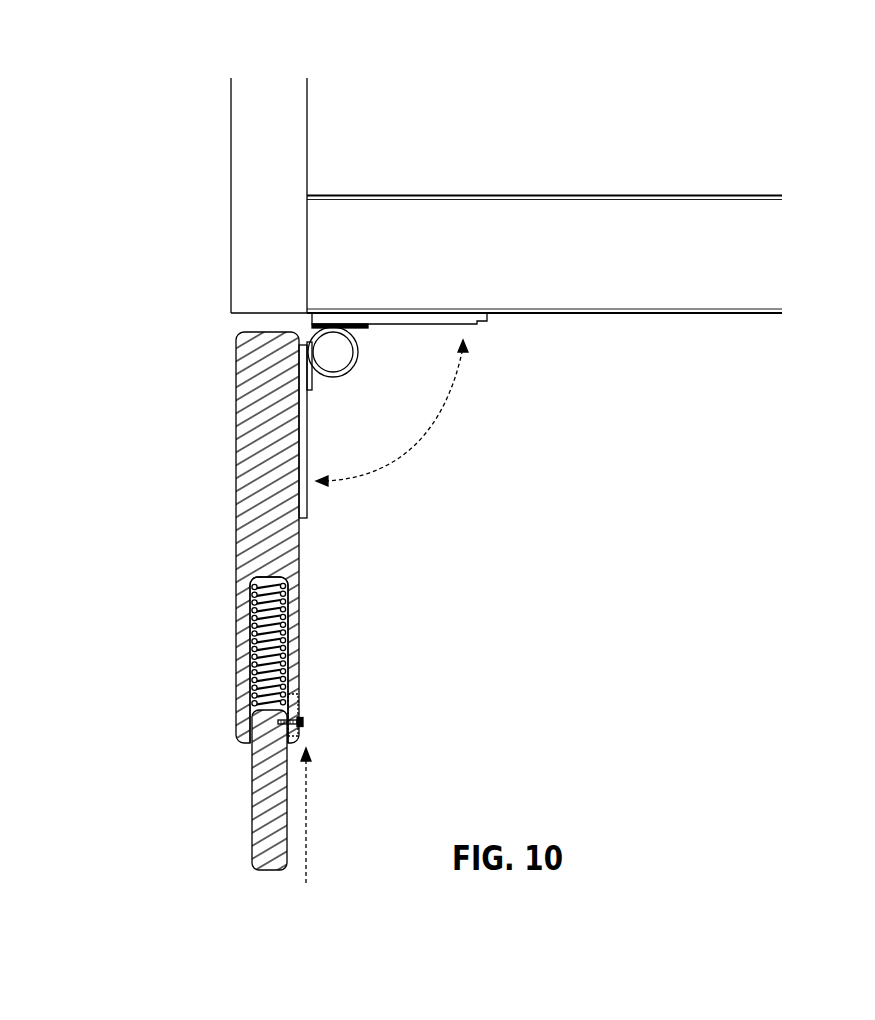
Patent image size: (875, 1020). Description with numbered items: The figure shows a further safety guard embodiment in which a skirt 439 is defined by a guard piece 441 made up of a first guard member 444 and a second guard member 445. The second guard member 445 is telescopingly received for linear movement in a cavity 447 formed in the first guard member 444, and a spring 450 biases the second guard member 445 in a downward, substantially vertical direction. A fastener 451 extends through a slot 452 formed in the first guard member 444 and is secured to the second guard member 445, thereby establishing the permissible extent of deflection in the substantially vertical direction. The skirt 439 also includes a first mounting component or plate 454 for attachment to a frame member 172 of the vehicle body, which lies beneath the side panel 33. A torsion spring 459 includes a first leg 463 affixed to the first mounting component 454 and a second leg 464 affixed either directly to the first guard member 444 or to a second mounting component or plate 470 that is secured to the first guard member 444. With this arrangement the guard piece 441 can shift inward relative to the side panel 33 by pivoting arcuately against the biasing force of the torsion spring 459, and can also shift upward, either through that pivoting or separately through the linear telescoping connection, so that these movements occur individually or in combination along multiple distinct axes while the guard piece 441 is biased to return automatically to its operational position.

The side panel 33 is at (237, 212).
The frame member 172 is at (657, 228).
The first mounting component or plate 454 is at (477, 326).
The first leg 463 is at (362, 329).
The torsion spring 459 is at (356, 372).
The second leg 464 is at (314, 391).
The second mounting component or plate 470 is at (309, 498).
The first guard member 444 is at (245, 427).
The guard piece 441 is at (268, 537).
The skirt 439 is at (251, 601).
The cavity 447 is at (290, 667).
The spring 450 is at (288, 630).
The second guard member 445 is at (257, 817).
The slot 452 is at (293, 715).
The fastener 451 is at (304, 722).